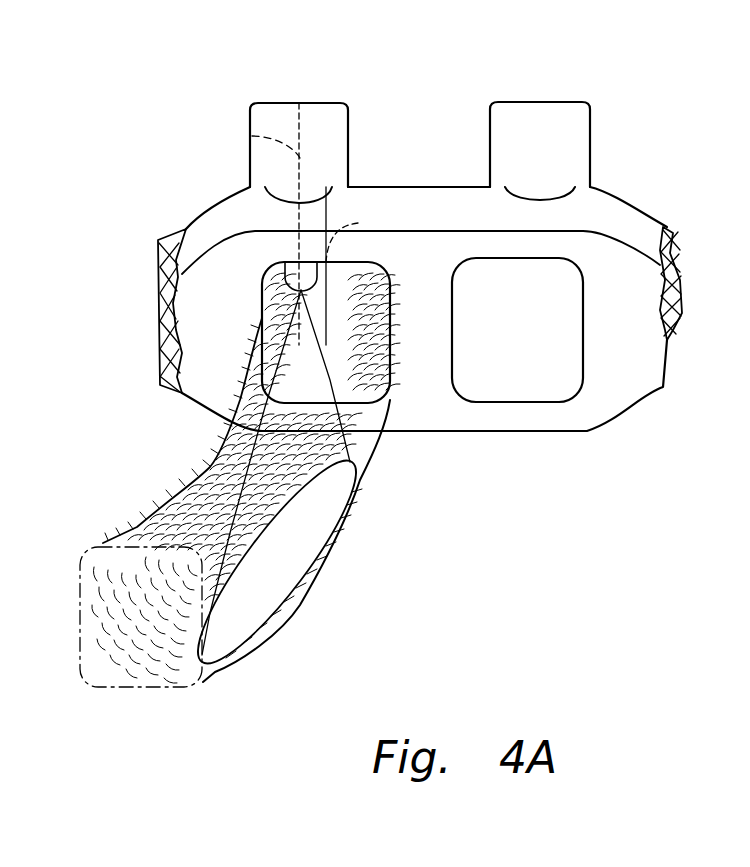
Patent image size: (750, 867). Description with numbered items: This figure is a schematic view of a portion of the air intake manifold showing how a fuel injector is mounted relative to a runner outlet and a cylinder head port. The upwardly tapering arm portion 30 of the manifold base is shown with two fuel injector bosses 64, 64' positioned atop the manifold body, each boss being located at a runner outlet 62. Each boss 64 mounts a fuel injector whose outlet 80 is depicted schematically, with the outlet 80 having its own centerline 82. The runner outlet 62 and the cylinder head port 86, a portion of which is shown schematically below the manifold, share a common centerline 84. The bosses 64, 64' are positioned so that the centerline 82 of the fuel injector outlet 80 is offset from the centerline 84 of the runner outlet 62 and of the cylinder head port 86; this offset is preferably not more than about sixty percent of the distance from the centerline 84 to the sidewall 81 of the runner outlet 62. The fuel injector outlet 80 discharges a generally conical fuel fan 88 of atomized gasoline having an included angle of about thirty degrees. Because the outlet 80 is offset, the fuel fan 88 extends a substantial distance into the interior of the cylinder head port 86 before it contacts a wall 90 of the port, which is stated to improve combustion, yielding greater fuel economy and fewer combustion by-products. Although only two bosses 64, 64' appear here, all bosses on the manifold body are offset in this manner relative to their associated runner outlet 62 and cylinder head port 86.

The tapering arm portion 30 is at (608, 217).
The runner outlet 62 is at (550, 342).
The fuel injector boss 64 is at (370, 130).
The fuel injector boss 64' is at (589, 131).
The fuel injector outlet 80 is at (388, 263).
The sidewall of runner outlet 81 is at (262, 298).
The centerline of fuel injector outlet 82 is at (252, 136).
The centerline of runner outlet 84 is at (358, 223).
The cylinder head port 86 is at (352, 540).
The fuel fan 88 is at (257, 460).
The wall of cylinder head port 90 is at (290, 607).